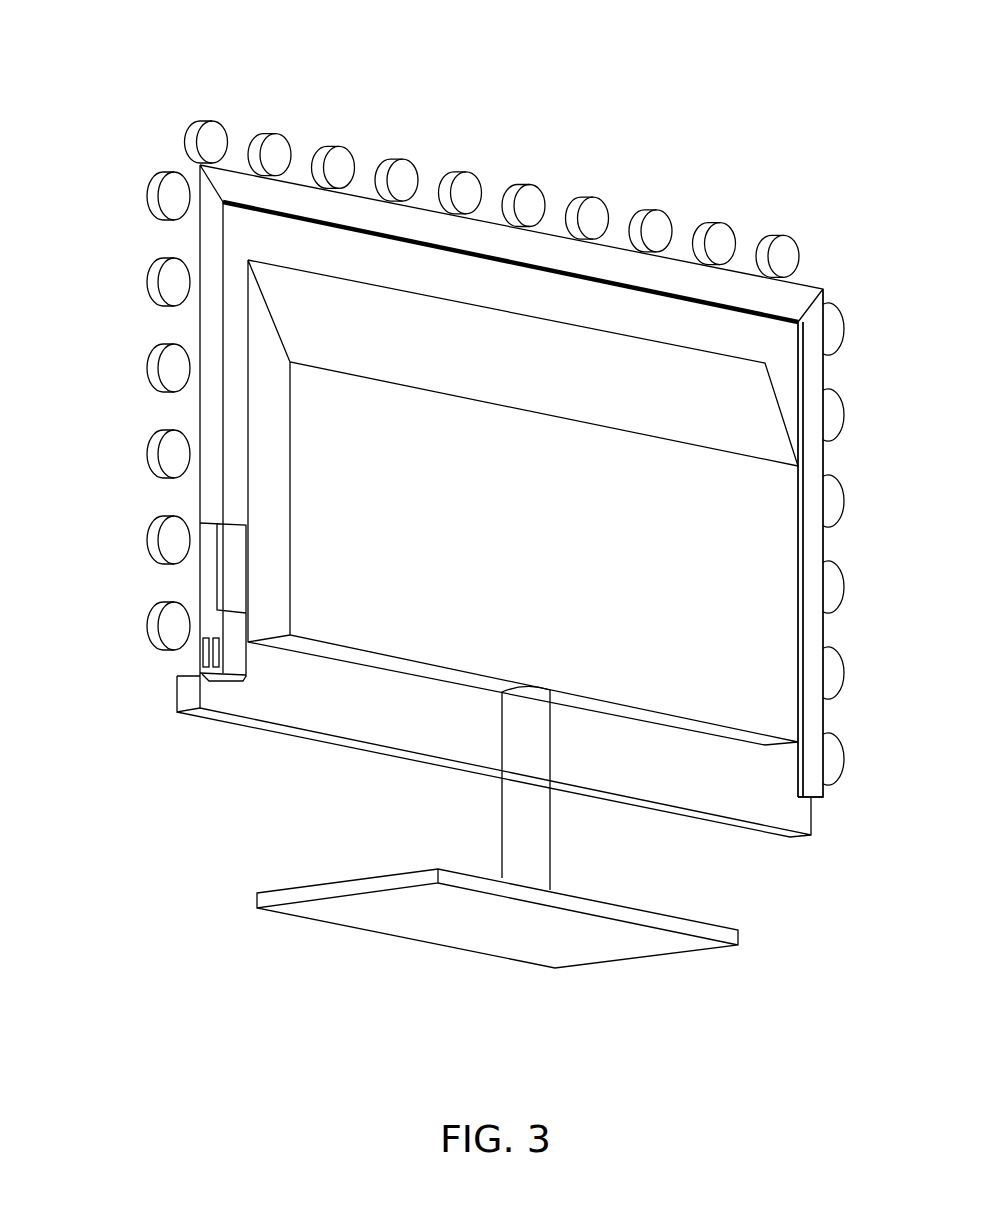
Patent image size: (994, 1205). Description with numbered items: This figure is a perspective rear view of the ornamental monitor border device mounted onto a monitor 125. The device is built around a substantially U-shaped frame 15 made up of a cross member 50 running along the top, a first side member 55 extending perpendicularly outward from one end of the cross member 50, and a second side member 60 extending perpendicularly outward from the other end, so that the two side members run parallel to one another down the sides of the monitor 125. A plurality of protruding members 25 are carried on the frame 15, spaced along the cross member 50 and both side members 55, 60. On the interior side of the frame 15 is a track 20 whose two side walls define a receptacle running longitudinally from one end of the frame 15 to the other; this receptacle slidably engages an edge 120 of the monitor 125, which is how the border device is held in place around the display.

The substantially U-shaped frame 15 is at (432, 100).
The track 20 is at (820, 815).
The protruding members 25 is at (660, 222).
The cross member 50 is at (557, 245).
The first side member 55 is at (812, 453).
The second side member 60 is at (187, 412).
The edge 120 is at (190, 692).
The monitor 125 is at (259, 760).